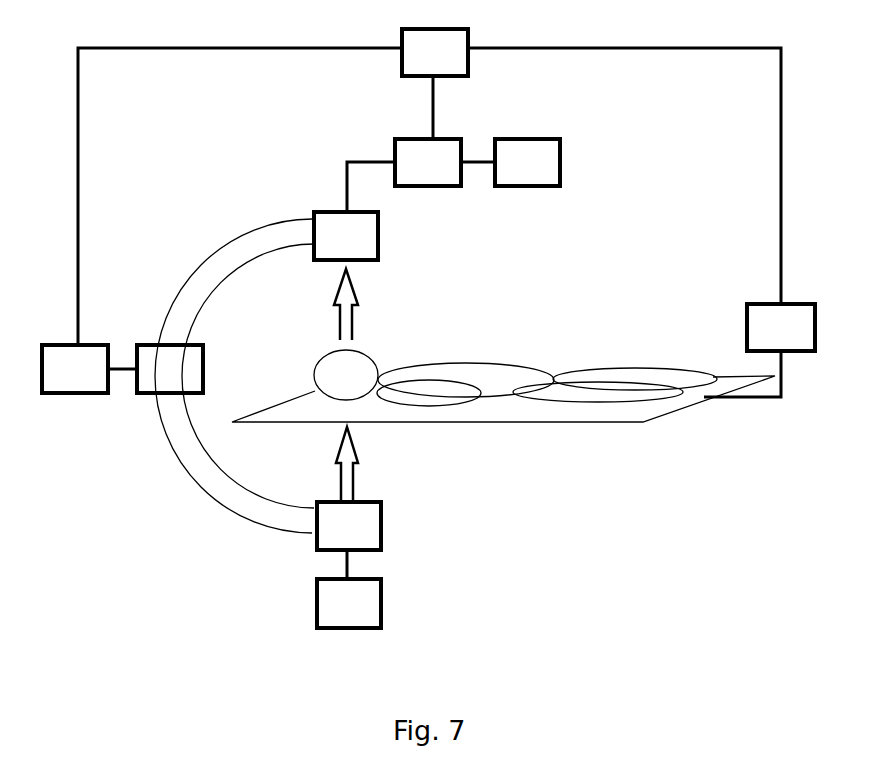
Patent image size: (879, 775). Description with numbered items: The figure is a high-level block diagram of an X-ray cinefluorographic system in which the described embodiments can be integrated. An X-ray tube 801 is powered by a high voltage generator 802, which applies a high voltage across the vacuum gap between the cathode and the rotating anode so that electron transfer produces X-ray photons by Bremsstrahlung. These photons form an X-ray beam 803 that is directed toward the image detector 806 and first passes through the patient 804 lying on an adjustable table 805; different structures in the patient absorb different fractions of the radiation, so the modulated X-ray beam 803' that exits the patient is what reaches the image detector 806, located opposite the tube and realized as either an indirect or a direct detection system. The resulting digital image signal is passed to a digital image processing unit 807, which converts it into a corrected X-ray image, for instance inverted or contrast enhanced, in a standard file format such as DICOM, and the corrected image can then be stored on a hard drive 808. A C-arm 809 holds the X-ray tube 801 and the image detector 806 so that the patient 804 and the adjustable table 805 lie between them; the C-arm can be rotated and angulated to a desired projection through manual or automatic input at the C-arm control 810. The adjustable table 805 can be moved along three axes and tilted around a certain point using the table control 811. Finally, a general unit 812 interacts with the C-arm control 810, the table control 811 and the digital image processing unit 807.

The X-ray tube 801 is at (349, 526).
The high voltage generator 802 is at (349, 603).
The X-ray beam 803 is at (366, 463).
The modulated X-ray beam 803' is at (368, 304).
The patient 804 is at (464, 372).
The adjustable table 805 is at (613, 411).
The image detector 806 is at (346, 236).
The digital image processing unit 807 is at (428, 162).
The hard drive 808 is at (527, 162).
The C-arm 809 is at (170, 369).
The C-arm control 810 is at (75, 369).
The table control 811 is at (781, 327).
The general unit 812 is at (435, 52).